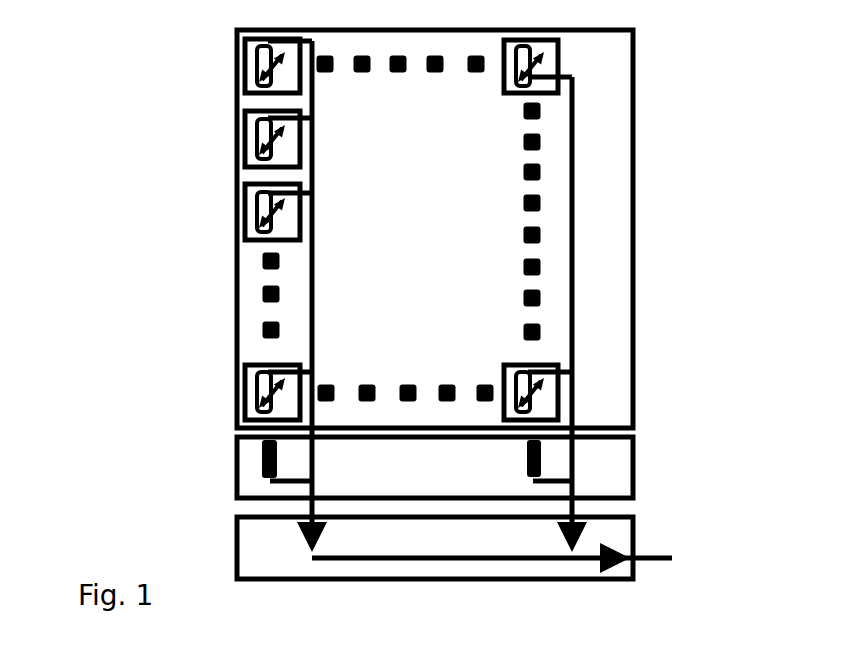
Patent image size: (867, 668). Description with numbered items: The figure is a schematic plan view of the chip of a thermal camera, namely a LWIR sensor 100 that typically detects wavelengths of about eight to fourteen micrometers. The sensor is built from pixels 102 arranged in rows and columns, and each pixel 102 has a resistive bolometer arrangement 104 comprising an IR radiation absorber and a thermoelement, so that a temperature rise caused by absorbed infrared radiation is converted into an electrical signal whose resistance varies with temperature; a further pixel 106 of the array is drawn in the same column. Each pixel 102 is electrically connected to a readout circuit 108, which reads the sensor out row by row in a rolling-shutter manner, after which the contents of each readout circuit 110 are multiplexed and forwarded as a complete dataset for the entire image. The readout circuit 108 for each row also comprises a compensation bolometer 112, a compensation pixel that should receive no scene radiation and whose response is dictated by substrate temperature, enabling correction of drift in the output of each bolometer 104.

The LWIR sensor 100 is at (174, 126).
The pixel 102 is at (302, 78).
The resistive bolometer arrangement 104 is at (530, 77).
The light emitter/detector unit 106 is at (312, 240).
The readout circuit 108 is at (410, 582).
The readout circuit contents 110 is at (655, 560).
The compensation bolometer 112 is at (262, 455).